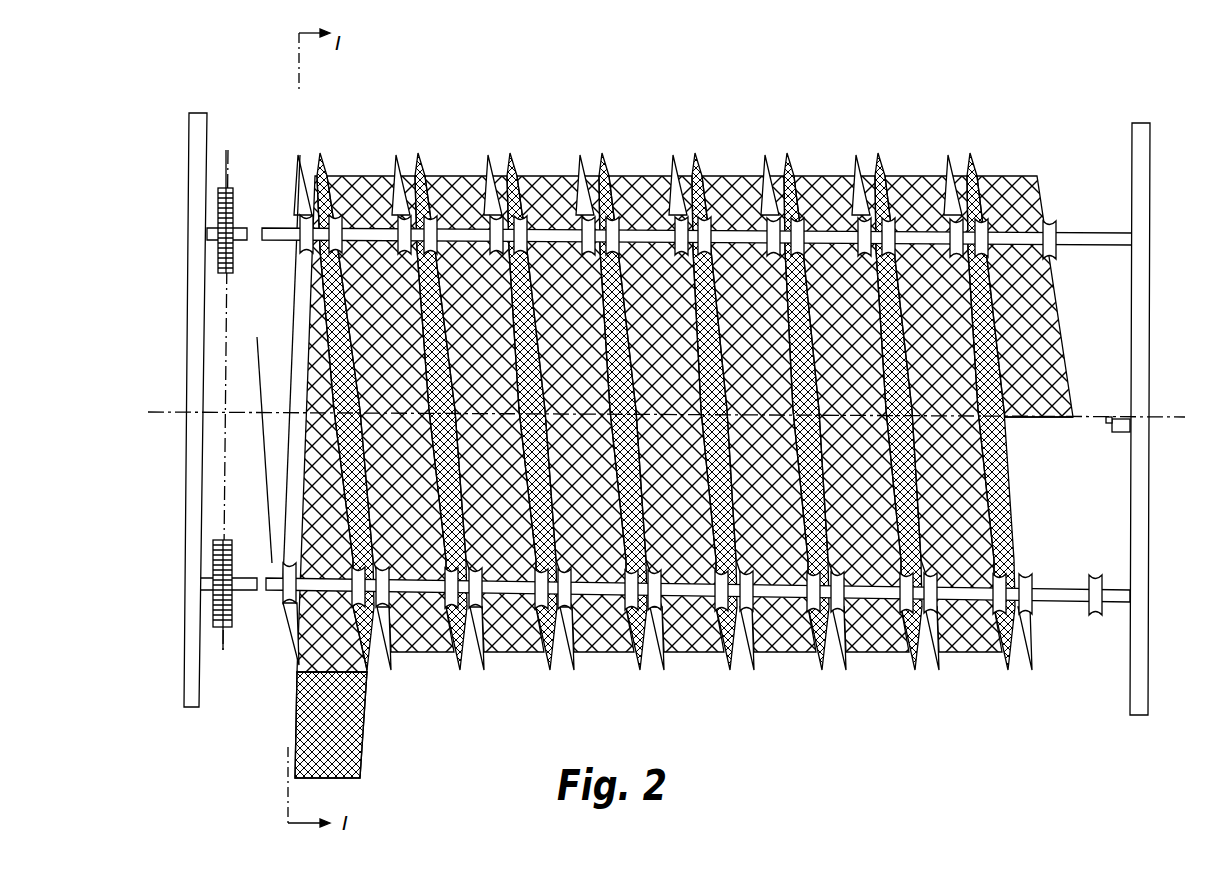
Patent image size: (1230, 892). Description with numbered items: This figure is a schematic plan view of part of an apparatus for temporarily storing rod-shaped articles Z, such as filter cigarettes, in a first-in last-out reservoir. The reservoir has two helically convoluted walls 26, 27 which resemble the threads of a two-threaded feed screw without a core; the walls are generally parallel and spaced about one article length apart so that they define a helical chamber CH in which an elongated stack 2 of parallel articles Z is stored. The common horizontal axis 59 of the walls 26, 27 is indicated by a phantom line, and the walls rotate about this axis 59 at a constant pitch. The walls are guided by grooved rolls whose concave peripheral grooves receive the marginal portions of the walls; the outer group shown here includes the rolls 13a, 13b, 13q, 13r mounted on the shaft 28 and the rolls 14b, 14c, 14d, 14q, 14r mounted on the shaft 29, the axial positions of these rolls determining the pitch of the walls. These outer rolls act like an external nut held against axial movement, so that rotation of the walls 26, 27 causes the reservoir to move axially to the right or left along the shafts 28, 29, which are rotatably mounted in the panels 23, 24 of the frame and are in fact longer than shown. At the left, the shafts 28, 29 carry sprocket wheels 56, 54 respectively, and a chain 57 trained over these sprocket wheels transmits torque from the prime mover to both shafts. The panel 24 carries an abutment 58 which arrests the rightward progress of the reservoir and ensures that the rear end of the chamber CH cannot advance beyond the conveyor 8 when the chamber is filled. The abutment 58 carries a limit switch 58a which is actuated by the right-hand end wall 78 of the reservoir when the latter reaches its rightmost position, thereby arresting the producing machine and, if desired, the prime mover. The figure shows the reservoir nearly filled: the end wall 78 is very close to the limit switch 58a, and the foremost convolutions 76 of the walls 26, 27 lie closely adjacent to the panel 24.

The stack of articles 2 is at (338, 752).
The conveyor 8 is at (368, 708).
The grooved roll 13a is at (288, 605).
The grooved roll 13b is at (373, 625).
The grooved roll 13q is at (1027, 616).
The grooved roll 13r is at (1095, 617).
The grooved roll 14b is at (312, 213).
The grooved roll 14c is at (337, 212).
The grooved roll 14d is at (407, 213).
The grooved roll 14q is at (980, 216).
The grooved roll 14r is at (1052, 221).
The panel 23 is at (198, 128).
The panel 24 is at (1140, 197).
The helically convoluted wall 26 is at (513, 173).
The helically convoluted wall 27 is at (317, 272).
The shaft 28 is at (268, 588).
The shaft 29 is at (279, 228).
The sprocket wheel 54 is at (230, 199).
The sprocket wheel 56 is at (225, 611).
The chain 57 is at (225, 347).
The abutment 58 is at (1120, 432).
The limit switch 58a is at (1111, 417).
The common axis 59 is at (1175, 416).
The foremost convolutions 76 is at (1060, 331).
The end wall 78 is at (1047, 419).
The rod-shaped article Z is at (638, 173).
The helical chamber CH is at (814, 170).